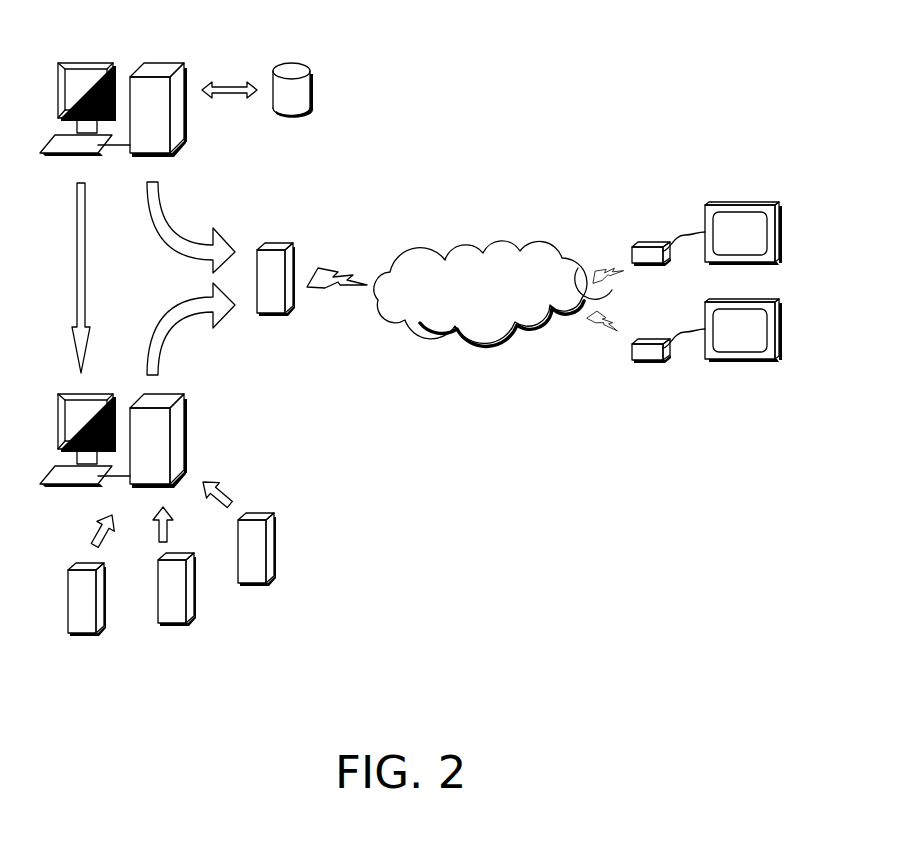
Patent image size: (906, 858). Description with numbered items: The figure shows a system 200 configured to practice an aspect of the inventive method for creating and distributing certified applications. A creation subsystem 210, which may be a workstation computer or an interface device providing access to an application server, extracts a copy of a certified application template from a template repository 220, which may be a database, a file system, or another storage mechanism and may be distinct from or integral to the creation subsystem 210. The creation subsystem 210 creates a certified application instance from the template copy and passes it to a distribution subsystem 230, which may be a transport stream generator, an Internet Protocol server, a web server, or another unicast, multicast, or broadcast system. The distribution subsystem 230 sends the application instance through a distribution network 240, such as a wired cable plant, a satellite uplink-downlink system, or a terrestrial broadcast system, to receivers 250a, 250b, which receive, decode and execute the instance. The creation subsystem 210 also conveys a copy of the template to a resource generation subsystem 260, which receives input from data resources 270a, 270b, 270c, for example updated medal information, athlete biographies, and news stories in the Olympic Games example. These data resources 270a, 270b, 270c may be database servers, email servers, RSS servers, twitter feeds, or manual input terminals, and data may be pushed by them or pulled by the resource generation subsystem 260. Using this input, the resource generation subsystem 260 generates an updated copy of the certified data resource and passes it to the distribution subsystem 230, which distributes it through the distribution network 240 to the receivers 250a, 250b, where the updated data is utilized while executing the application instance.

The system 200 is at (612, 38).
The creation subsystem 210 is at (173, 65).
The template repository 220 is at (305, 65).
The distribution subsystem 230 is at (284, 243).
The distribution network 240 is at (430, 333).
The receiver 250a is at (727, 203).
The receiver 250b is at (728, 361).
The resource generation subsystem 260 is at (173, 395).
The data resource 270a is at (262, 584).
The data resource 270b is at (185, 624).
The data resource 270c is at (93, 636).